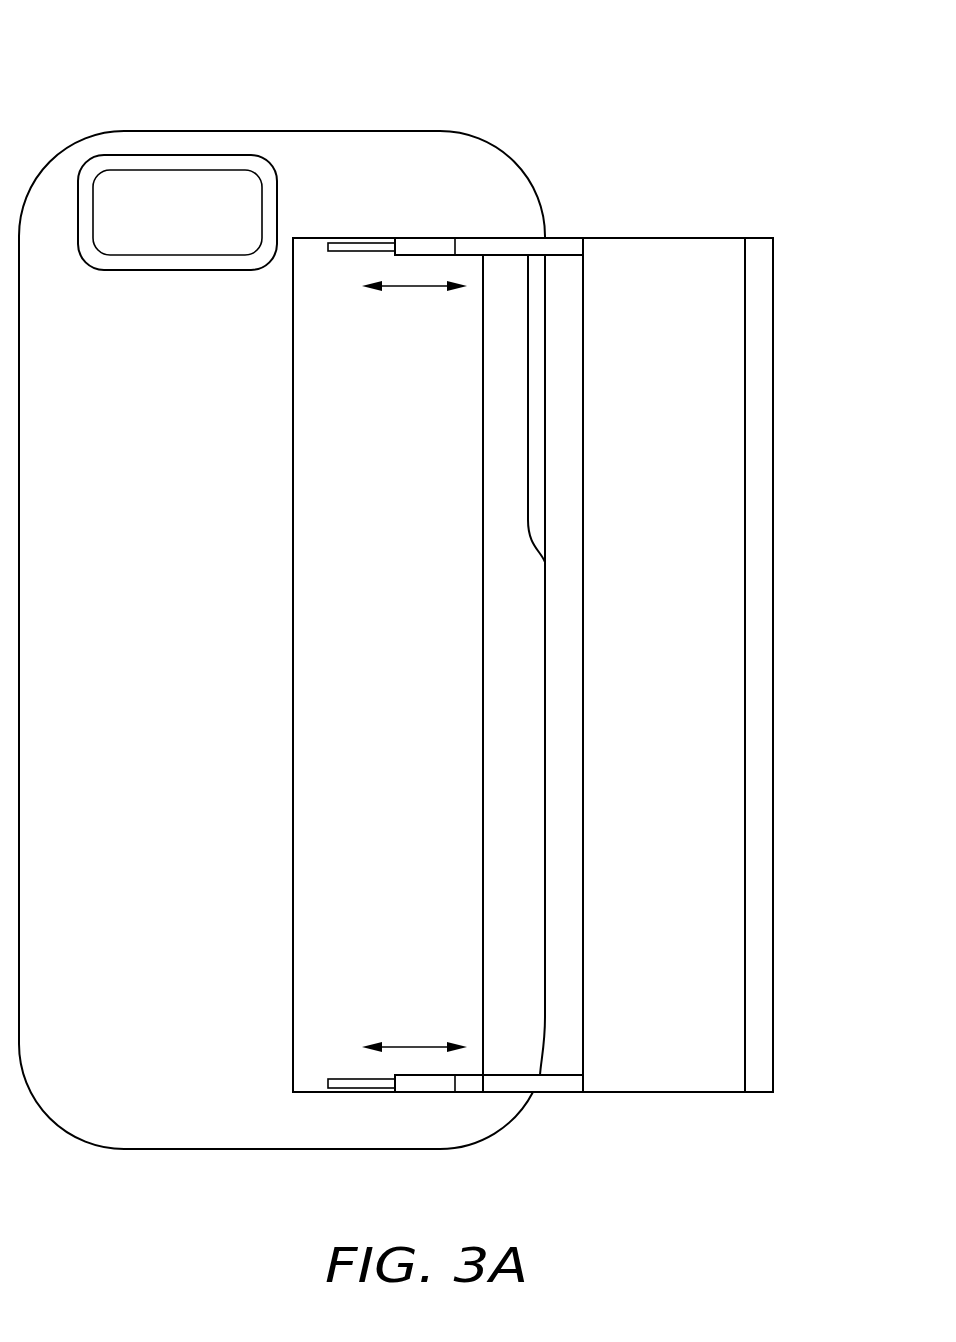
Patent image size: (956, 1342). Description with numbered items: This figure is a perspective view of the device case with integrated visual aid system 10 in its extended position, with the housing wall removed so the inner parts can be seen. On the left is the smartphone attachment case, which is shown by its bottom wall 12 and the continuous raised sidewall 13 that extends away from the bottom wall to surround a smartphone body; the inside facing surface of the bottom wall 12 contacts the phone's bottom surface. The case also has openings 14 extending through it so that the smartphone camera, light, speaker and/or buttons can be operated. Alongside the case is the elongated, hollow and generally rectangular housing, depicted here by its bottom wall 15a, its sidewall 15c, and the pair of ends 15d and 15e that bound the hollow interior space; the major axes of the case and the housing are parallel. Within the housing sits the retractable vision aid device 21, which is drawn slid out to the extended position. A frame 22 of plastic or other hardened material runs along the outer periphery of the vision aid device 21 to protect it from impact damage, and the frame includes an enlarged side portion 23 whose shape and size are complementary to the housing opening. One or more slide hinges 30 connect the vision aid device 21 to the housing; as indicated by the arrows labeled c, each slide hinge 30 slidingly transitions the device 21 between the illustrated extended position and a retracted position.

The system 10 is at (105, 87).
The bottom wall 12 is at (172, 695).
The sidewall 13 is at (547, 1020).
The openings 14 is at (537, 345).
The bottom wall 15a is at (400, 763).
The sidewall 15c is at (293, 933).
The end 15d is at (379, 238).
The end 15e is at (379, 1092).
The visual aid device 21 is at (675, 673).
The frame 22 is at (585, 972).
The enlarged side portion 23 is at (760, 740).
The slide hinges 30 is at (498, 249).